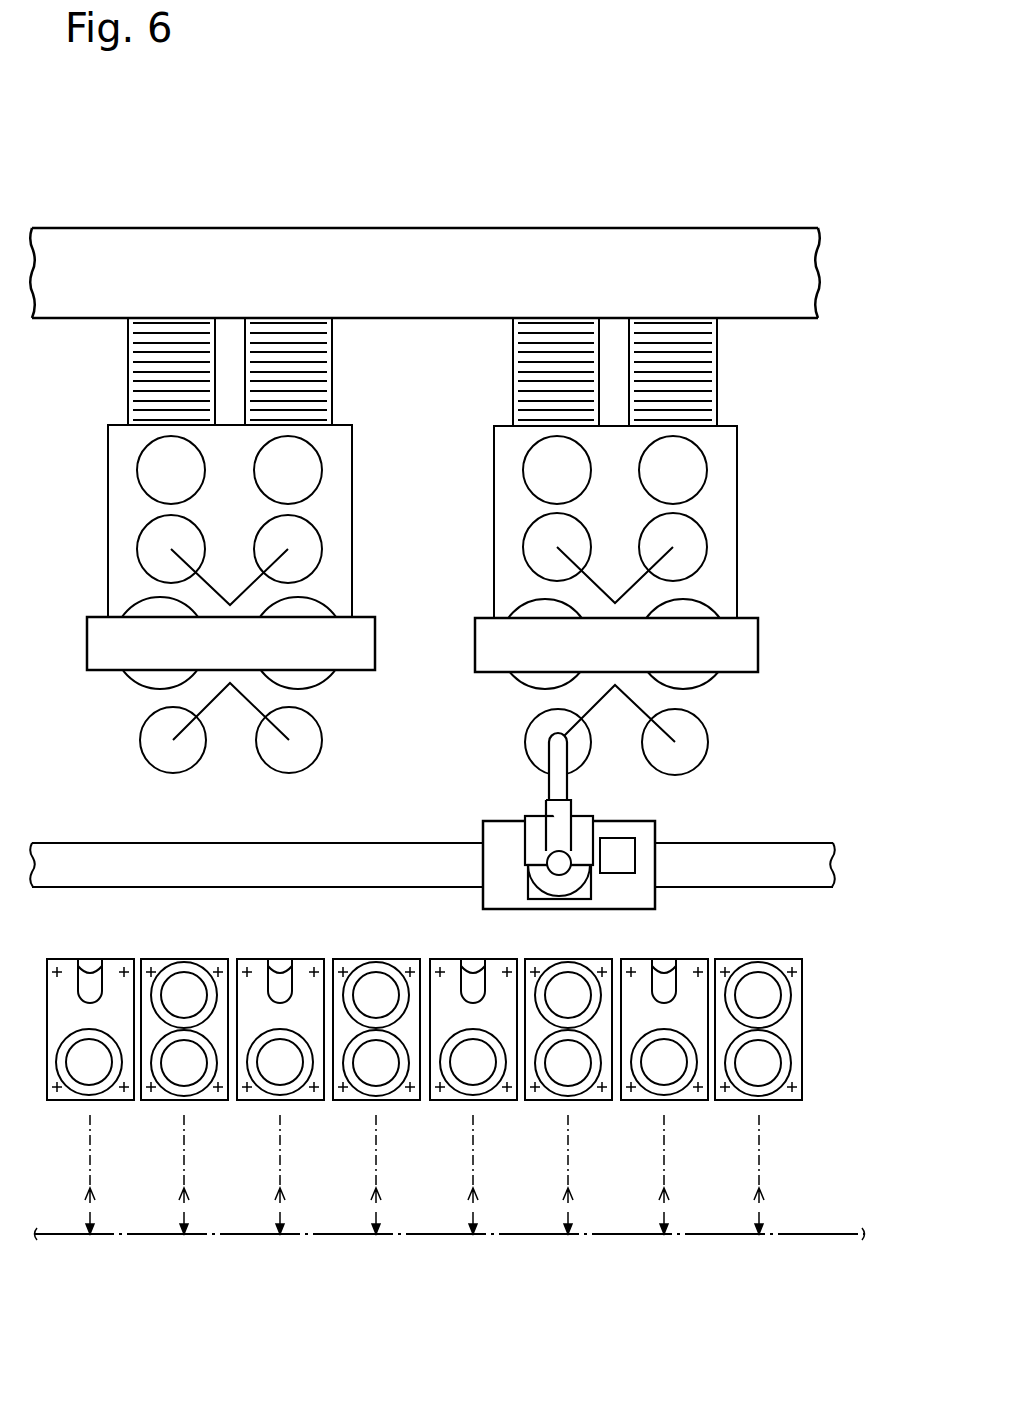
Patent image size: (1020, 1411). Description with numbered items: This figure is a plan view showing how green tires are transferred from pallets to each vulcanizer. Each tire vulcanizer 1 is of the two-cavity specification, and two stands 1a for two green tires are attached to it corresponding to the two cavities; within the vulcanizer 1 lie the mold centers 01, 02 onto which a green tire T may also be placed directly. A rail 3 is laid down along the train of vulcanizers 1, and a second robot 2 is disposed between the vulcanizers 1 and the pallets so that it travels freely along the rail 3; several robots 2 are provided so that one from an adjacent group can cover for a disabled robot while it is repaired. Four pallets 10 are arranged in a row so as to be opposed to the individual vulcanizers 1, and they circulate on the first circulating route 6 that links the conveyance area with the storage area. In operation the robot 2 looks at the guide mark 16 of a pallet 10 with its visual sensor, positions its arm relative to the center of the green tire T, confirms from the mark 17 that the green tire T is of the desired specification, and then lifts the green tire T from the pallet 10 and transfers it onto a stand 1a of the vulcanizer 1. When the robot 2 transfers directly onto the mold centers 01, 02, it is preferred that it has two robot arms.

The tire vulcanizer 1 is at (622, 546).
The stand 1a is at (708, 723).
The mold center 01 is at (528, 535).
The mold center 02 is at (693, 537).
The second robot 2 is at (483, 832).
The rail 3 is at (790, 843).
The first circulating route 6 is at (433, 1234).
The pallet 10 is at (443, 1035).
The guide mark 16 is at (800, 990).
The mark 17 is at (775, 1011).
The green tire T is at (792, 997).